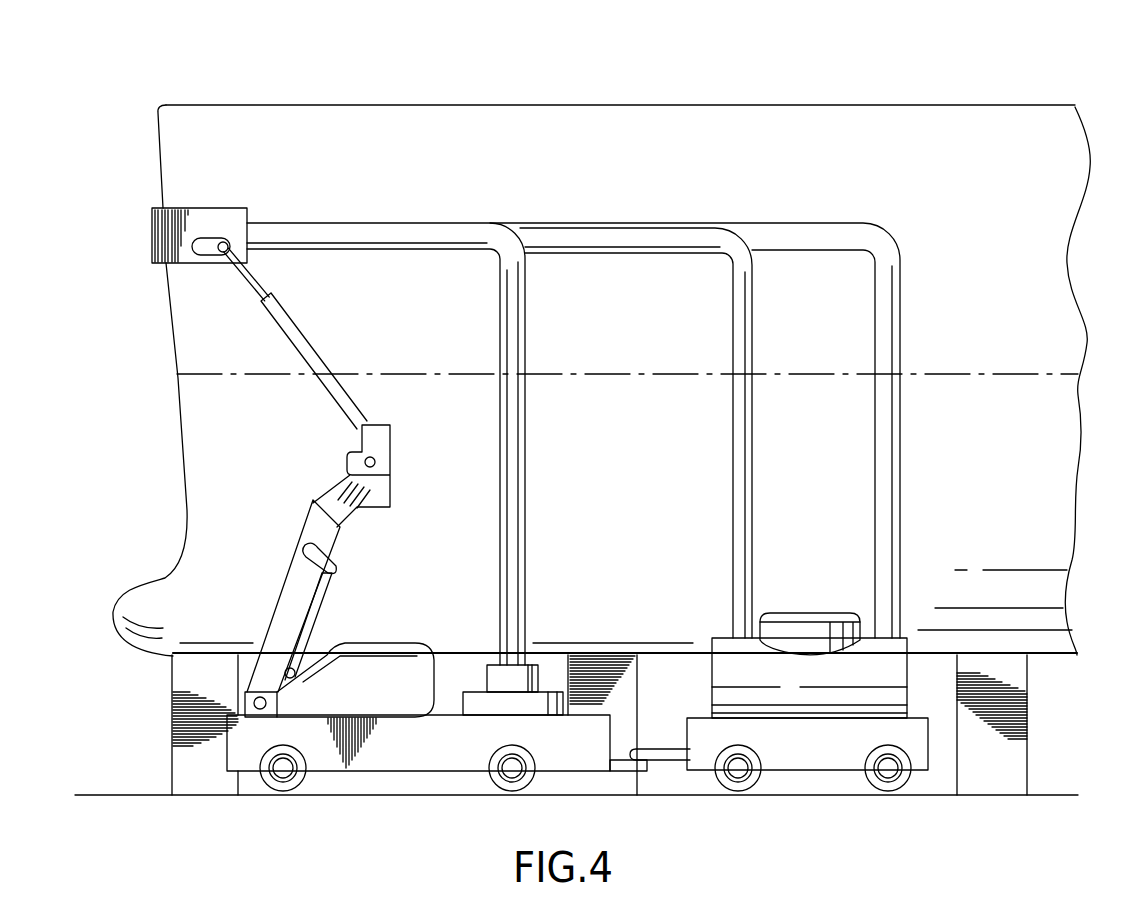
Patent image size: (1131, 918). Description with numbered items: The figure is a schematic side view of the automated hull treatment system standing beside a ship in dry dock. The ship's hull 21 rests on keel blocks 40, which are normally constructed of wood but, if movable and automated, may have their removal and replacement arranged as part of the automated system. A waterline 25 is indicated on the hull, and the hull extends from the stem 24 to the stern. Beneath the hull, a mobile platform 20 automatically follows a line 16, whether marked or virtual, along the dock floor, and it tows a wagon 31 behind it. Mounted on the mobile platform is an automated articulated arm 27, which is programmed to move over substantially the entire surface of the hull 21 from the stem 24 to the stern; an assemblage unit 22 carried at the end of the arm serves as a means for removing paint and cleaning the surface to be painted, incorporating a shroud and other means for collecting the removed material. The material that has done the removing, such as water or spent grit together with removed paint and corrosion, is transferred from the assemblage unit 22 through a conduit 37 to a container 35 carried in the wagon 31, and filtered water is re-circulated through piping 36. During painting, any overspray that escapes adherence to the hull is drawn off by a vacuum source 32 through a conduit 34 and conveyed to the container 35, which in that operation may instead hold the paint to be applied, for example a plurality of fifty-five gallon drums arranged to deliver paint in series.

The line 16 is at (427, 791).
The mobile platform 20 is at (421, 757).
The hull 21 is at (555, 125).
The assemblage unit 22 is at (208, 208).
The stem 24 is at (162, 176).
The waterline 25 is at (583, 360).
The articulated arm 27 is at (346, 357).
The wagon 31 is at (827, 757).
The vacuum source 32 is at (460, 698).
The conduit 34 is at (528, 460).
The container 35 is at (715, 637).
The piping 36 is at (752, 488).
The conduit 37 is at (875, 420).
The keel blocks 40 is at (180, 752).